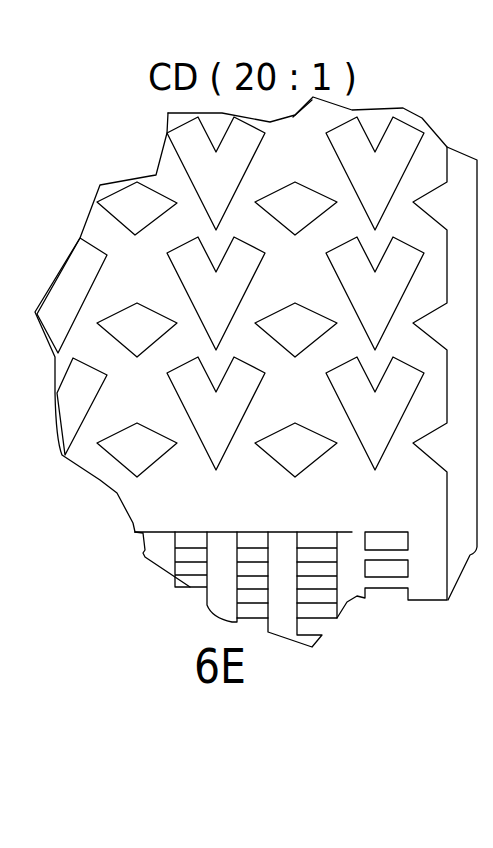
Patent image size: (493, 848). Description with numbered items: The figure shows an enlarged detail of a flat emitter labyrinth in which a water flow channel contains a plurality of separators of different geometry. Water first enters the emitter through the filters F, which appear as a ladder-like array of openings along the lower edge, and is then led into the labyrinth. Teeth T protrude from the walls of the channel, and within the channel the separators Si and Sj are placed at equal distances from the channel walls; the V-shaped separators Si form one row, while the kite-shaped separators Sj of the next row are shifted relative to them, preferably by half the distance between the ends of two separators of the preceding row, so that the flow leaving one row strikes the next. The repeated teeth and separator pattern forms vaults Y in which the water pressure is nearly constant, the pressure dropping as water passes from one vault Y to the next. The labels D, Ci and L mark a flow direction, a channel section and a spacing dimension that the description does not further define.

The vault Y is at (140, 267).
The tooth T is at (37, 147).
The direction of movement D is at (0, 387).
The contact element i Ci is at (0, 513).
The filter F is at (220, 572).
The separator Sj is at (158, 463).
The separator Si is at (295, 710).
The pitch length L is at (122, 477).